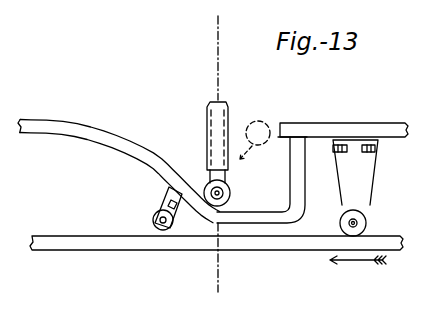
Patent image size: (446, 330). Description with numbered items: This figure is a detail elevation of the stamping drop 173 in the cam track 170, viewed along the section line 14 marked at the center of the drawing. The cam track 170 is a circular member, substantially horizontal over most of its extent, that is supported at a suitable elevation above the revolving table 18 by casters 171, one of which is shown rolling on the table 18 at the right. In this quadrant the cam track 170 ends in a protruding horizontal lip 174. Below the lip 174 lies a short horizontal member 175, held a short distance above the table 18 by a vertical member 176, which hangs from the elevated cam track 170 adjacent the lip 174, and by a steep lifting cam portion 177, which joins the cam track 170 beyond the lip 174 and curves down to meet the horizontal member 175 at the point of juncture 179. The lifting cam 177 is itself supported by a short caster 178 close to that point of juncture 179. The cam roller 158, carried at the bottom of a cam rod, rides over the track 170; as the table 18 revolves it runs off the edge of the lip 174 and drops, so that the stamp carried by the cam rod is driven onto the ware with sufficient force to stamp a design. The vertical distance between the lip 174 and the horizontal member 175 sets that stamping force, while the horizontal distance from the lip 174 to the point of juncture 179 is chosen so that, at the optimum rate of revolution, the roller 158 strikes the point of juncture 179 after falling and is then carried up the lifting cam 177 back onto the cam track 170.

The section line 14- 14 is at (215, 37).
The revolving table 18 is at (83, 266).
The cam roller 158 is at (233, 193).
The cam track 170 is at (398, 122).
The caster 171 is at (366, 212).
The drop 173 is at (309, 228).
The lip 174 is at (277, 128).
The horizontal member 175 is at (266, 225).
The vertical member 176 is at (305, 199).
The lifting cam portion 177 is at (116, 141).
The short caster 178 is at (155, 212).
The point of juncture 179 is at (222, 218).